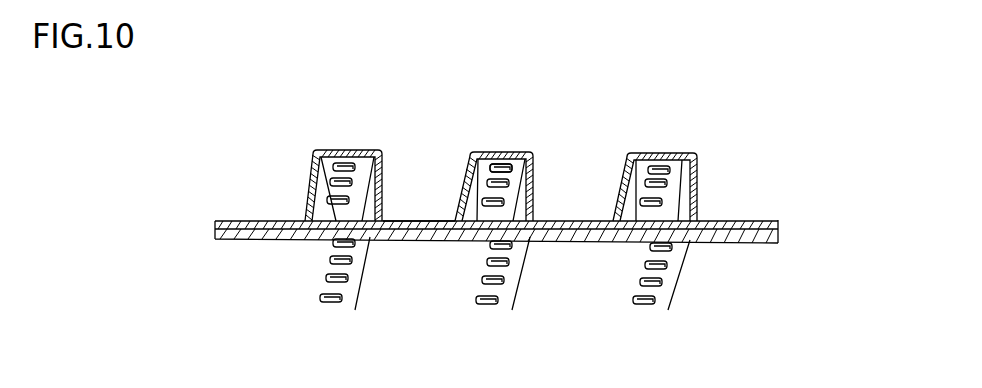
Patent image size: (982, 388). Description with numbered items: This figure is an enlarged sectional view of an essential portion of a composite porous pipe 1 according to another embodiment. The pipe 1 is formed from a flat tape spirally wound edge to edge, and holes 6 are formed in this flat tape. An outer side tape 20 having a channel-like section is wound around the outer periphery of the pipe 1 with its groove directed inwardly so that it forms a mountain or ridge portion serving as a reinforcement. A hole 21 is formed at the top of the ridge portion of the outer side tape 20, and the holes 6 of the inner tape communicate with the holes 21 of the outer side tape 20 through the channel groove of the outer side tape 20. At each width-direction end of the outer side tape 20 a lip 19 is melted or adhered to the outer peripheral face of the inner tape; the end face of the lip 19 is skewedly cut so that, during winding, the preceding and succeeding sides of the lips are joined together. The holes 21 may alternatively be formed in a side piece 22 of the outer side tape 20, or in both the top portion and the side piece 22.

The porous pipe 1 is at (725, 222).
The holes 6 is at (345, 238).
The lip 19 is at (398, 219).
The outer side tape 20 is at (373, 152).
The hole 21 is at (505, 163).
The side piece 22 is at (537, 182).